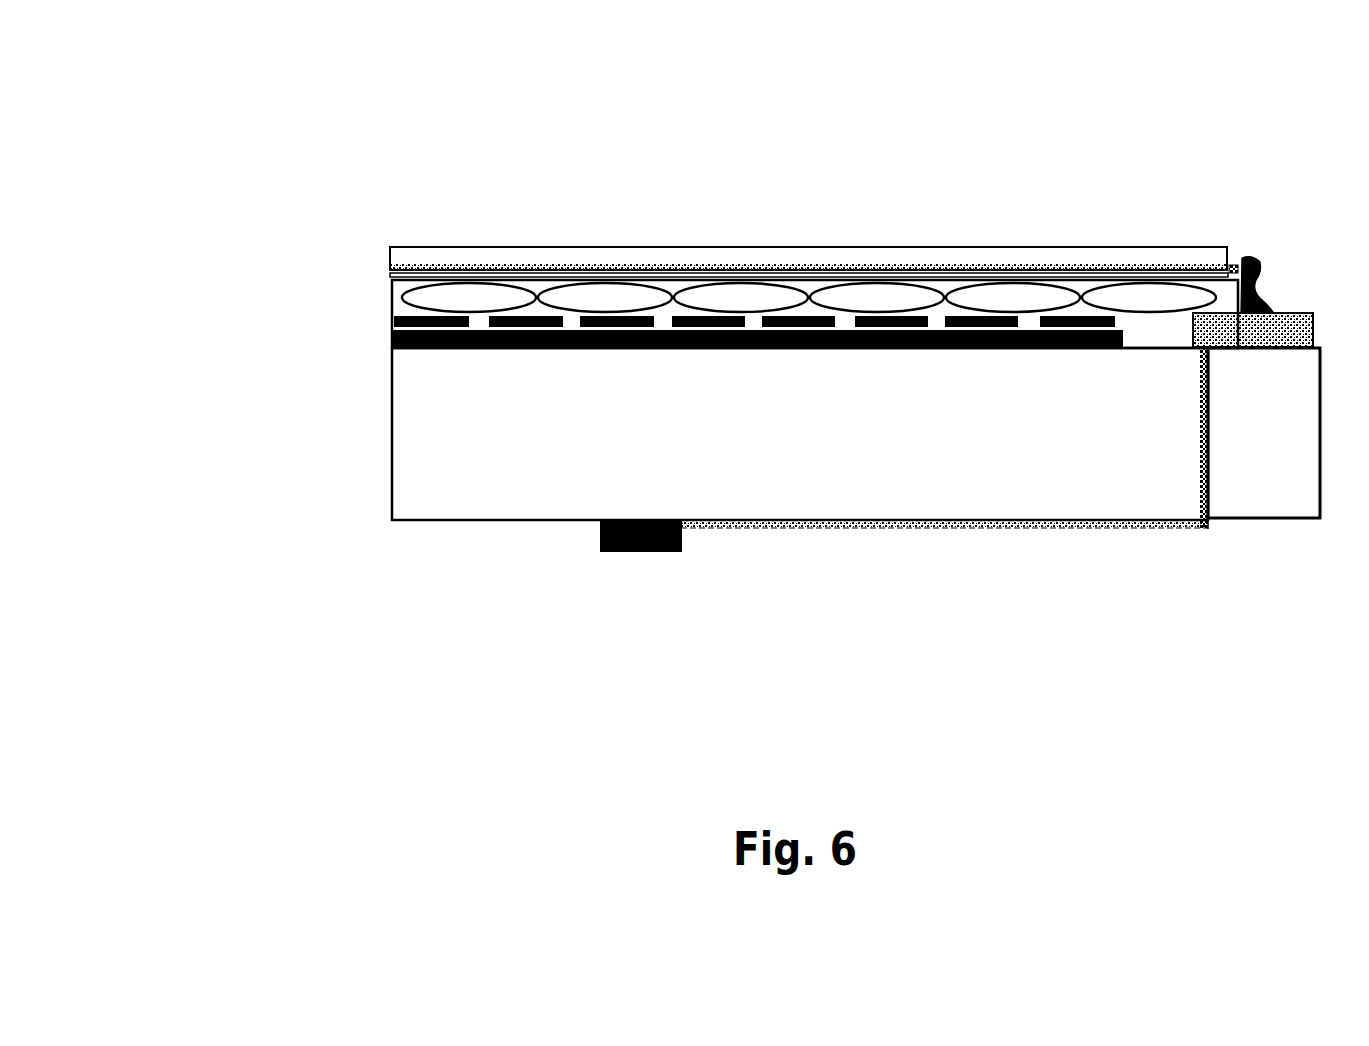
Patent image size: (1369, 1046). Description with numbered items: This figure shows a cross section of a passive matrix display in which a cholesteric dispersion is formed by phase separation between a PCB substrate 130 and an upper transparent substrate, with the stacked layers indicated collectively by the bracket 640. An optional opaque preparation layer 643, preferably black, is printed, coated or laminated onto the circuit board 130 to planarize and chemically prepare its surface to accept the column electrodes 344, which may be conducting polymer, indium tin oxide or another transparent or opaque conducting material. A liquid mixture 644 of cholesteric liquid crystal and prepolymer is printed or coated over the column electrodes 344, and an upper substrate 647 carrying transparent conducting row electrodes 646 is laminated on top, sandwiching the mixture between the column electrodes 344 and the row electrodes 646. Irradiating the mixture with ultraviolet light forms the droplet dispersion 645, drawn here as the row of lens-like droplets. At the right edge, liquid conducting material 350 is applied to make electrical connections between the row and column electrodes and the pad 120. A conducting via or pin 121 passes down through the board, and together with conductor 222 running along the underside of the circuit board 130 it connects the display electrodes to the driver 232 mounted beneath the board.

The optical module 640 is at (182, 52).
The upper substrate 647 is at (558, 260).
The transparent conducting electrodes 646 is at (425, 272).
The droplet dispersion 645 is at (390, 295).
The liquid mixture 644 is at (666, 312).
The column electrodes 344 is at (390, 322).
The opaque preparation layer 643 is at (390, 345).
The PCB substrate 130 is at (452, 442).
The liquid conducting material 350 is at (1250, 258).
The pad 120 is at (1277, 327).
The conducting via or pin 121 is at (1202, 417).
The conductor 222 is at (850, 527).
The driver 232 is at (620, 540).